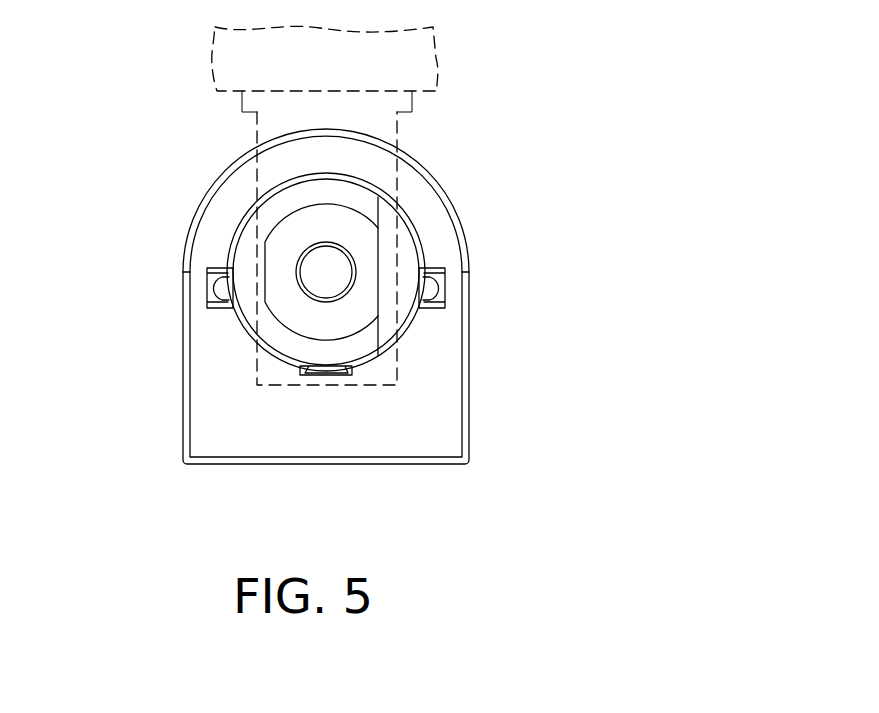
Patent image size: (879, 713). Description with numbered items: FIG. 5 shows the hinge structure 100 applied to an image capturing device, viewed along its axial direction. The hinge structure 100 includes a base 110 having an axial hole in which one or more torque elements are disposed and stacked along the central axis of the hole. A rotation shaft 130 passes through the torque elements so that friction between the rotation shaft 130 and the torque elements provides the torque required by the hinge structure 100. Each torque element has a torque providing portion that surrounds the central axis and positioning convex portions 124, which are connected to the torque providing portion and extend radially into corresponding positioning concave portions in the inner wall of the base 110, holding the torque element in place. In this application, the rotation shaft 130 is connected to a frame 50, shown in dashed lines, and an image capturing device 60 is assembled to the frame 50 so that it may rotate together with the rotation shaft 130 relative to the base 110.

The frame 50 is at (397, 122).
The image capturing device 60 is at (437, 53).
The hinge structure 100 is at (346, 338).
The base 110 is at (400, 423).
The positioning convex portions 124 is at (218, 283).
The rotation shaft 130 is at (305, 312).